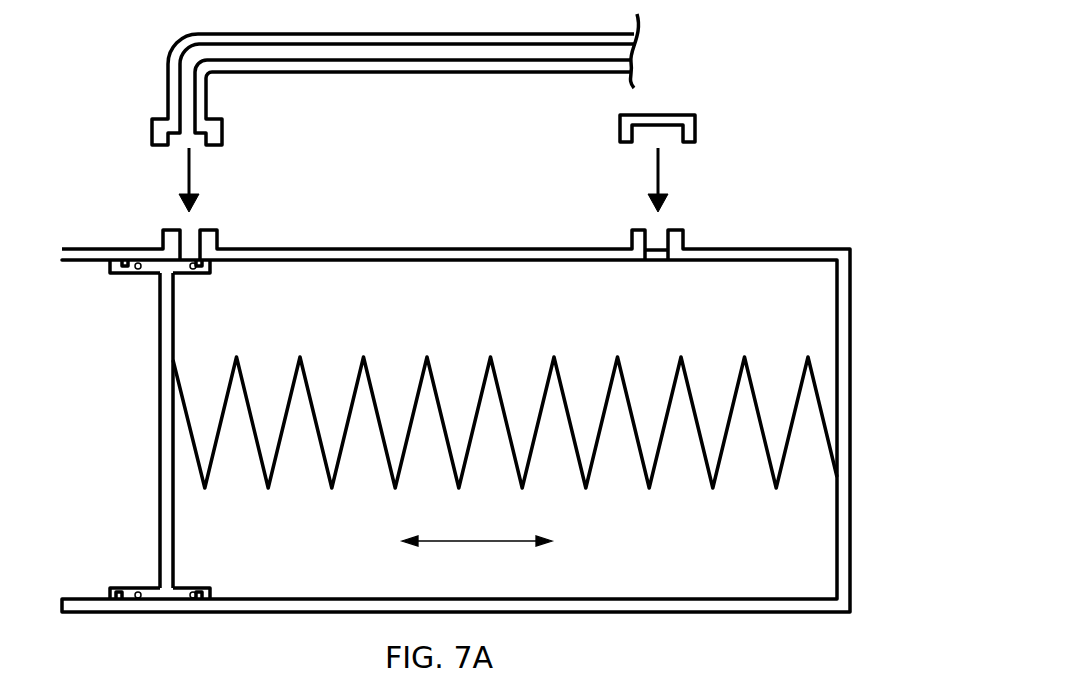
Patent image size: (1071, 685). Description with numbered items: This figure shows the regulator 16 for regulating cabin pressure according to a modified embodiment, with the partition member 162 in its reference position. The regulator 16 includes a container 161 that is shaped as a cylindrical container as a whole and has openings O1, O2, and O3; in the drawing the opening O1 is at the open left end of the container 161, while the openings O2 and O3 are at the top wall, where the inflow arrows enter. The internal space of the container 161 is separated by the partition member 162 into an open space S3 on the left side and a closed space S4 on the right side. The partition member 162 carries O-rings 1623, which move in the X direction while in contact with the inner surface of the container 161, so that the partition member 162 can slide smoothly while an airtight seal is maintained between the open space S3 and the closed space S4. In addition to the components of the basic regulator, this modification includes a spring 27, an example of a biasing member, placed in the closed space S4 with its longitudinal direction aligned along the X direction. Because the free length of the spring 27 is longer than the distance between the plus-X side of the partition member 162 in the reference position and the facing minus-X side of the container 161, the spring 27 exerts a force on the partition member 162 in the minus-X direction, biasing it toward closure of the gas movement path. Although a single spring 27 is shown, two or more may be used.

The regulator 16 is at (460, 306).
The container 161 is at (478, 249).
The partition member 162 is at (187, 429).
The O-ring 1623 is at (130, 588).
The spring 27 is at (366, 362).
The opening O1 is at (58, 423).
The opening O2 is at (188, 225).
The opening O3 is at (656, 225).
The open space S3 is at (124, 423).
The closed space S4 is at (723, 543).